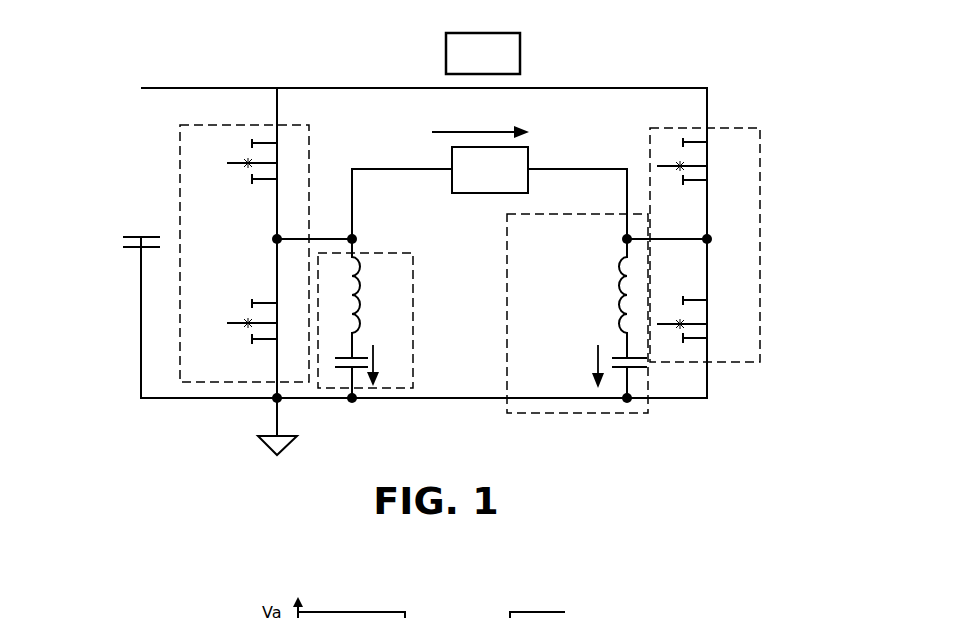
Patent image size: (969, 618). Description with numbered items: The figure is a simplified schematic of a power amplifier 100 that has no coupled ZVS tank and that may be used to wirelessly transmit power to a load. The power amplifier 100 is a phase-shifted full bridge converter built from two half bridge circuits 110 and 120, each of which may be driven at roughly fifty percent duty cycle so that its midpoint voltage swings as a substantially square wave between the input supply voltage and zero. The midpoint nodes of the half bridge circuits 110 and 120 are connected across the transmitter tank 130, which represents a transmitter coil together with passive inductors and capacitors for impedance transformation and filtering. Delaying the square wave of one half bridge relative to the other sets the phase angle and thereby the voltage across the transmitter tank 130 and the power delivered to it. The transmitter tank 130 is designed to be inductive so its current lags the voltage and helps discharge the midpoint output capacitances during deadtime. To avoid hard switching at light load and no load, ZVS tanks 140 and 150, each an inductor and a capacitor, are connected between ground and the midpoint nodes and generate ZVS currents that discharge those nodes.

The power amplifier 100 is at (738, 54).
The half bridge circuit 110 is at (762, 160).
The half bridge circuit 120 is at (180, 144).
The transmitter tank 130 is at (535, 148).
The ZVS tank 140 is at (547, 414).
The ZVS tank 150 is at (386, 389).